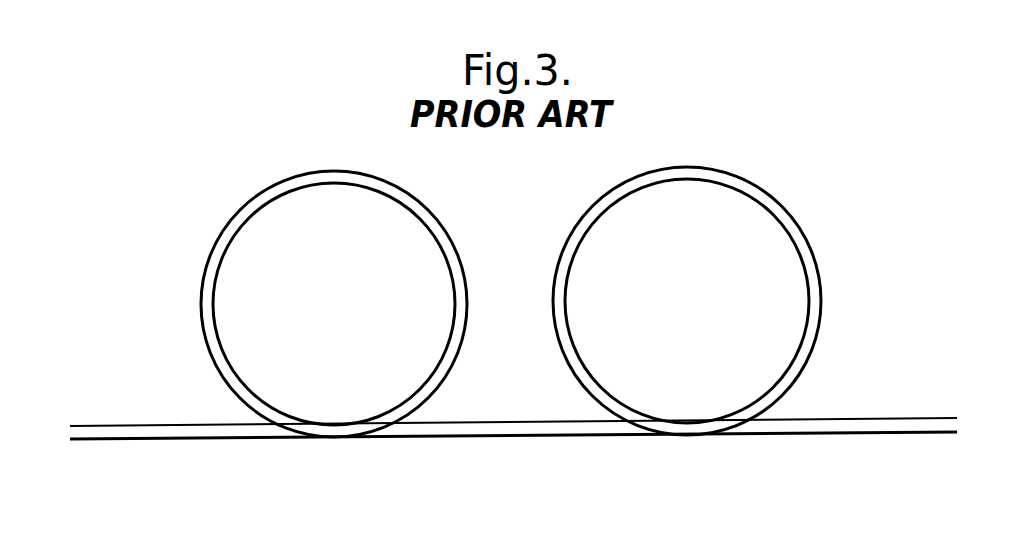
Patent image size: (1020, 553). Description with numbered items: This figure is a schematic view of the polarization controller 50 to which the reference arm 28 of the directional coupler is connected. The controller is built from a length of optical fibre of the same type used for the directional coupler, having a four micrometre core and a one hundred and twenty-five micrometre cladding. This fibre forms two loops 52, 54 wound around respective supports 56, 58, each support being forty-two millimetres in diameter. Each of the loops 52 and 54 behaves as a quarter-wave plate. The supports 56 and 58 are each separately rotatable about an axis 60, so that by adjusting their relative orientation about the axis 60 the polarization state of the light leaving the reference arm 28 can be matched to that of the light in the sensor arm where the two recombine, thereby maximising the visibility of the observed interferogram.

The polarization controller 50 is at (637, 132).
The first loop 52 is at (248, 198).
The second loop 54 is at (735, 172).
The first support 56 is at (410, 275).
The second support 58 is at (773, 265).
The reference arm 28 is at (82, 425).
The axis 60 is at (198, 439).